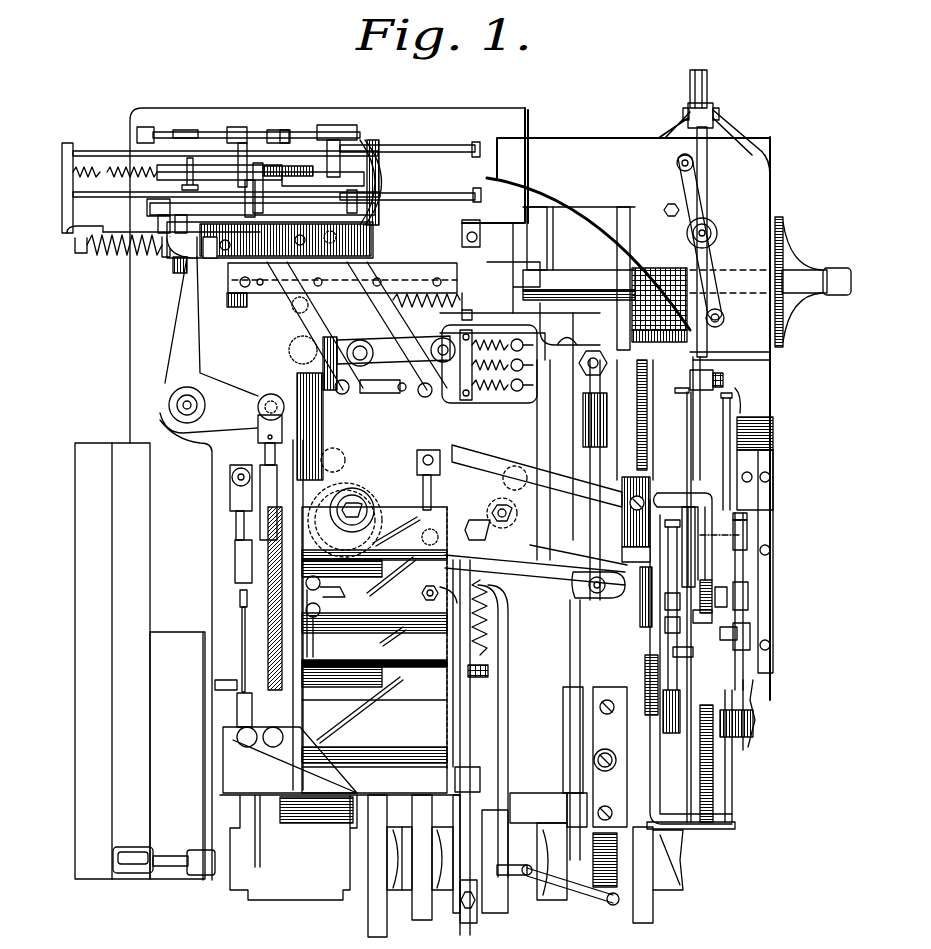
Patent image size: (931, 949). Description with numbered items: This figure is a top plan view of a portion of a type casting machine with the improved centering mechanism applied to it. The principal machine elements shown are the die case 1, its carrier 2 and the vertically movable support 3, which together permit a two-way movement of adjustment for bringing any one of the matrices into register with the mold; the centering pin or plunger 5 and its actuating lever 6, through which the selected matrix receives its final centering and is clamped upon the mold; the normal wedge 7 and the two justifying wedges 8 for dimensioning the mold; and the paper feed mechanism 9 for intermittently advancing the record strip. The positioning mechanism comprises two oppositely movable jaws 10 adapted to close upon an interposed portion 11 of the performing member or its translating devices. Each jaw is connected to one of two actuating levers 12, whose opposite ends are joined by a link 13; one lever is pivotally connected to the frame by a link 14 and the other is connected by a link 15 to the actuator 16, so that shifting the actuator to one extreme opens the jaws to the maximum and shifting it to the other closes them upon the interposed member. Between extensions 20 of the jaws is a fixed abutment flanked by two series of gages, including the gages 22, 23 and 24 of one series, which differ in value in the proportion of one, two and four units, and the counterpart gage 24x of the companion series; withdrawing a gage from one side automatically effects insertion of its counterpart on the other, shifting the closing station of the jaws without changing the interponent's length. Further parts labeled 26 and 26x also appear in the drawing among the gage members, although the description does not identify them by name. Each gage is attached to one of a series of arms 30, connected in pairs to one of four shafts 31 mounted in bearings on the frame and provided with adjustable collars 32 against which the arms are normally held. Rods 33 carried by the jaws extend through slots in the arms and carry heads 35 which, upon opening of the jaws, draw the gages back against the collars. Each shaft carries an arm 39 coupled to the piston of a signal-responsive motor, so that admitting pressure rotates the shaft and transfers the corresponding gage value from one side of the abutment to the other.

The die case 1 is at (645, 290).
The carrier 2 is at (622, 277).
The vertically movable support 3 is at (662, 302).
The centering pin or plunger 5 is at (712, 228).
The actuating lever 6 is at (578, 382).
The normal wedge 7 is at (605, 448).
The justifying wedges 8 is at (550, 432).
The paper feed mechanism 9 is at (347, 597).
The positioning jaws 10 is at (238, 257).
The interposed portion 11 is at (630, 545).
The actuating levers 12 is at (375, 288).
The link 13 is at (380, 393).
The link 14 is at (442, 345).
The link 15 is at (300, 362).
The actuator 16 is at (350, 460).
The extensions 20 is at (345, 167).
The gage 22 is at (203, 165).
The gage 23 is at (261, 196).
The gage 24 is at (214, 178).
The gage 24x is at (300, 177).
The spring 26 is at (115, 181).
The rod 26x is at (380, 182).
The arms 30 is at (225, 147).
The shafts 31 is at (320, 135).
The adjustable collars 32 is at (347, 140).
The rods 33 is at (95, 160).
The heads 35 is at (82, 155).
The arm 39 is at (200, 140).